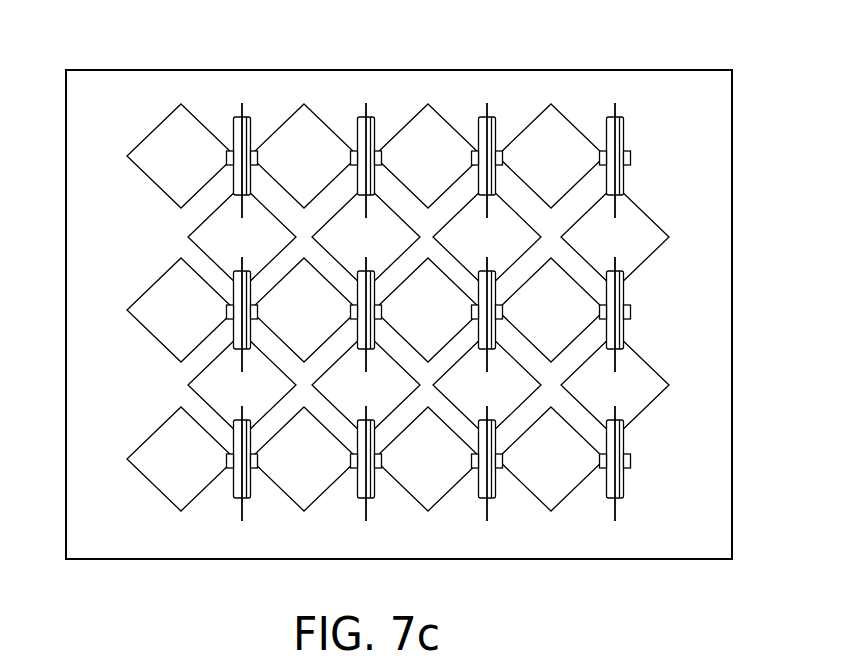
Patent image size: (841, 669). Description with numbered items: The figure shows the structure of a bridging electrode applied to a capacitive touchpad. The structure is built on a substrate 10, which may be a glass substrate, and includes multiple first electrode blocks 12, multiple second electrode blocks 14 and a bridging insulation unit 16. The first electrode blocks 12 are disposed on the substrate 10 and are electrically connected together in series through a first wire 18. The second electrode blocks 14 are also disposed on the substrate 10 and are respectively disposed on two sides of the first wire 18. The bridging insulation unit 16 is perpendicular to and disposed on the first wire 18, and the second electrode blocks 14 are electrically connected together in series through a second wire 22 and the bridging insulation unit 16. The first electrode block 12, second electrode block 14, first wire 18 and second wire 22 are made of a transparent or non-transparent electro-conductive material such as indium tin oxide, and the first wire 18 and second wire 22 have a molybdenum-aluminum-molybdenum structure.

The substrate 10 is at (702, 196).
The first electrode block 12 is at (178, 135).
The second electrode block 14 is at (213, 235).
The bridging insulation unit 16 is at (496, 127).
The first wire 18 is at (378, 152).
The second wire 22 is at (247, 130).